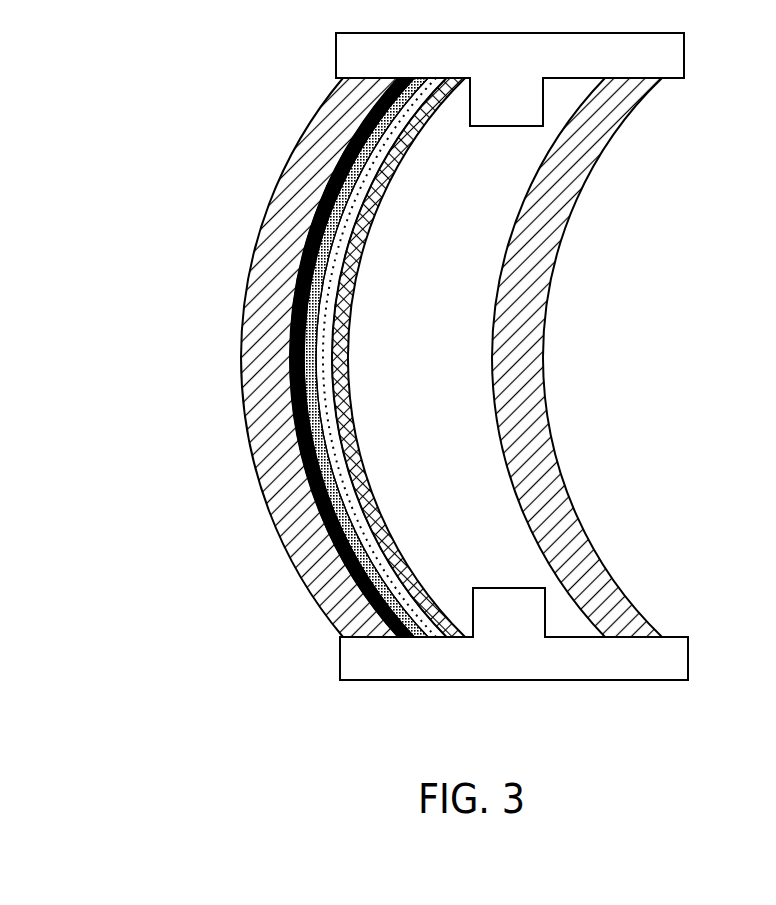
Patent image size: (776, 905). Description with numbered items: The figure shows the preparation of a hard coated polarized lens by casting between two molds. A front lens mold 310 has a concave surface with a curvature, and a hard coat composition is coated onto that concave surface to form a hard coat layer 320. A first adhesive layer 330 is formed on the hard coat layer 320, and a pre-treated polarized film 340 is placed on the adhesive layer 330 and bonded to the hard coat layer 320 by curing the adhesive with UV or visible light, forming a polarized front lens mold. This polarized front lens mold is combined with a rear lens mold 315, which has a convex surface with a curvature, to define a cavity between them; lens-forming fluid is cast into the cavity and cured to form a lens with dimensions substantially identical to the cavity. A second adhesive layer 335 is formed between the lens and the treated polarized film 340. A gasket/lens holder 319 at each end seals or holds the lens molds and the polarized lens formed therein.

The gasket/lens holder 319 is at (355, 52).
The front lens mold 310 is at (313, 156).
The hard coat layer 320 is at (298, 270).
The first adhesive layer 330 is at (305, 330).
The second adhesive layer 335 is at (337, 390).
The polarized film 340 is at (340, 457).
The rear lens mold 315 is at (510, 392).